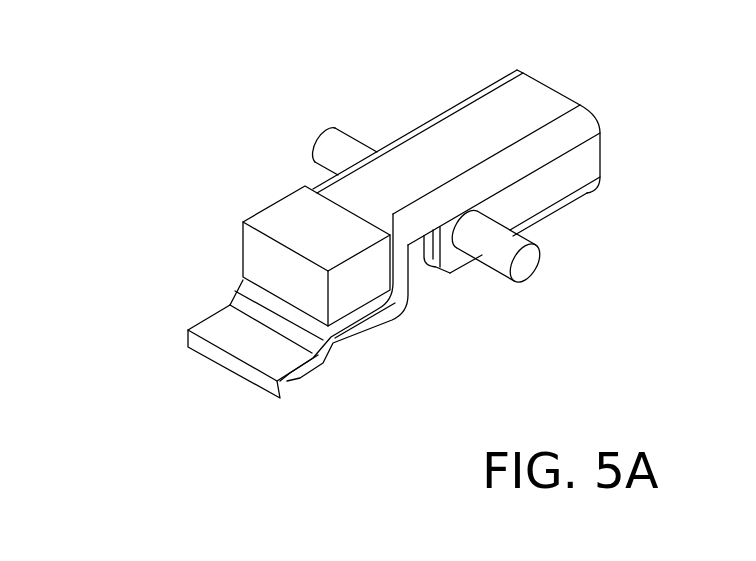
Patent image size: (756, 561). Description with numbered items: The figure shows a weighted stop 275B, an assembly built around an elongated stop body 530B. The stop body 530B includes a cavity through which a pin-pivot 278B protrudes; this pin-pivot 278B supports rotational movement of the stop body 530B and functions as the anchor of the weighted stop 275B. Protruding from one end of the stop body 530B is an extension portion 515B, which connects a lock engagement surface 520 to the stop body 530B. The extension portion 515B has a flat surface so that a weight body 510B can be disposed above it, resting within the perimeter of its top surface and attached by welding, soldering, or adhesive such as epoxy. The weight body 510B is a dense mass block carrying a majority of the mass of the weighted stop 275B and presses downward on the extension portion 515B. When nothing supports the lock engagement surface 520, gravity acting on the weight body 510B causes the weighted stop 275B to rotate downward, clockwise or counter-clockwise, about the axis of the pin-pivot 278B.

The weighted stop 275B is at (430, 239).
The stop body 530B is at (494, 84).
The pin-pivot 278B is at (325, 135).
The weight body 510B is at (272, 213).
The extension portion 515B is at (380, 313).
The lock engagement surface 520 is at (283, 382).